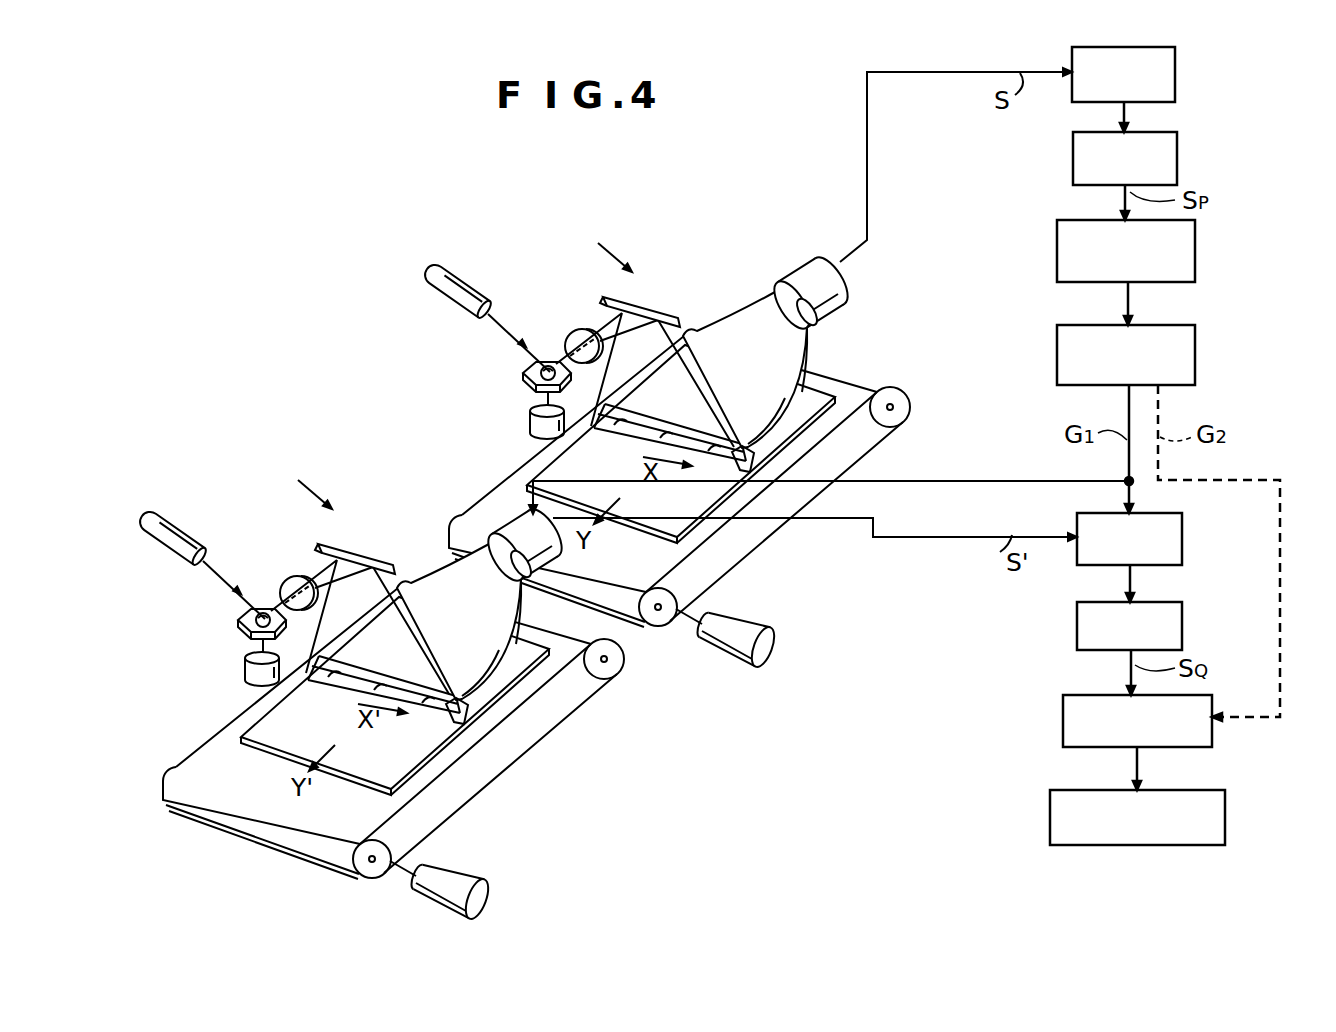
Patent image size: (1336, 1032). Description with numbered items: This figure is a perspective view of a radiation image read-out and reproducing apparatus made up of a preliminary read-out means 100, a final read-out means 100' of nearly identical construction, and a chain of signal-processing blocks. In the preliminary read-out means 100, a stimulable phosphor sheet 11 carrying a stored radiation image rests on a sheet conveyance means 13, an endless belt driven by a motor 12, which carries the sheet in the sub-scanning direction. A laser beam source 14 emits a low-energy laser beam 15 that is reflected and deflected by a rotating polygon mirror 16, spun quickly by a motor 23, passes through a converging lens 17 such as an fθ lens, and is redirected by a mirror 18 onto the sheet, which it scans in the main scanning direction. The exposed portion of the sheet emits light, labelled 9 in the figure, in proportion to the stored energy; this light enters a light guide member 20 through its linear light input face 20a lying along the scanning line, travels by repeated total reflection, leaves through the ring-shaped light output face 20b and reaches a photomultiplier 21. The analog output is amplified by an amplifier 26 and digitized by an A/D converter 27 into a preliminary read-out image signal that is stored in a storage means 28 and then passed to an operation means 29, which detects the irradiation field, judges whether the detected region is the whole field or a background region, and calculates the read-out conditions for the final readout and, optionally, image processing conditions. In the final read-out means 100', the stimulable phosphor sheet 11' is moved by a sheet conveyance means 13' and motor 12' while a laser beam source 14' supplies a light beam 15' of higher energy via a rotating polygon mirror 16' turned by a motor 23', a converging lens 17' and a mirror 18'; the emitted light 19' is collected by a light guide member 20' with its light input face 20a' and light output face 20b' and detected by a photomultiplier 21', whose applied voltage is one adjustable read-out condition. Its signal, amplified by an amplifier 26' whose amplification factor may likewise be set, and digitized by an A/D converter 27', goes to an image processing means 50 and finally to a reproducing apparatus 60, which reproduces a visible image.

The scanning line on object 9 is at (613, 428).
The stimulable phosphor sheet 11 is at (681, 454).
The motor 12 is at (741, 627).
The sheet conveyance means 13 is at (679, 481).
The laser beam source 14 is at (464, 285).
The laser beam 15 is at (519, 331).
The rotating polygon mirror 16 is at (515, 372).
The converging lens 17 is at (575, 320).
The mirror 18 is at (645, 358).
The light guide member 20 is at (745, 359).
The linear light input face 20a is at (807, 480).
The ring-shaped light output face 20b is at (843, 359).
The photomultiplier 21 is at (810, 278).
The motor 23 is at (516, 415).
The amplifier 26 is at (1164, 74).
The A/D converter 27 is at (1168, 158).
The storage means 28 is at (1197, 238).
The operation means 29 is at (1197, 355).
The image processing means 50 is at (1212, 745).
The reproducing apparatus 60 is at (1227, 818).
The preliminary read-out means 100 is at (596, 242).
The final read-out means 100' is at (285, 481).
The stimulable phosphor sheet 11' is at (395, 704).
The motor 12' is at (459, 877).
The sheet conveyance means 13' is at (393, 733).
The laser beam source 14' is at (183, 532).
The light beam 15' is at (234, 578).
The rotating polygon mirror 16' is at (224, 614).
The converging lens 17' is at (302, 559).
The mirror 18' is at (360, 605).
The emitted light 19' is at (371, 698).
The light guide member 20' is at (459, 603).
The linear light input face 20a' is at (519, 732).
The ring-shaped light output face 20b' is at (577, 596).
The photomultiplier 21' is at (511, 523).
The motor 23' is at (226, 662).
The amplifier 26' is at (1173, 539).
The A/D converter 27' is at (1173, 626).